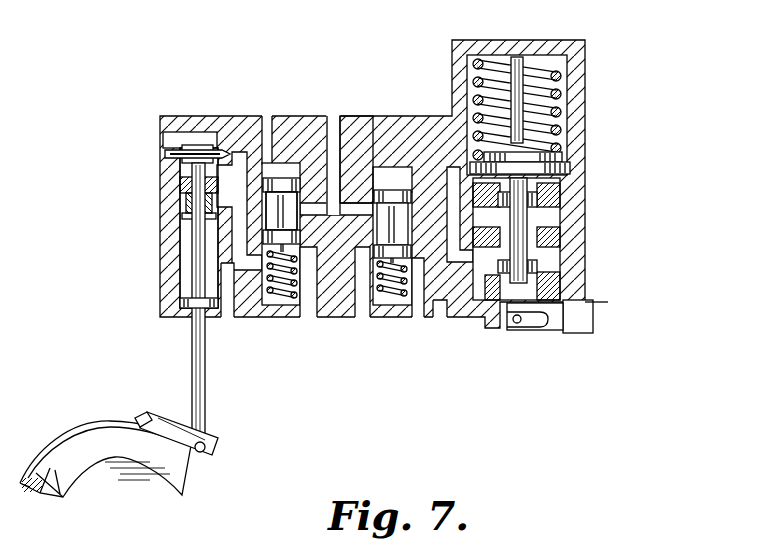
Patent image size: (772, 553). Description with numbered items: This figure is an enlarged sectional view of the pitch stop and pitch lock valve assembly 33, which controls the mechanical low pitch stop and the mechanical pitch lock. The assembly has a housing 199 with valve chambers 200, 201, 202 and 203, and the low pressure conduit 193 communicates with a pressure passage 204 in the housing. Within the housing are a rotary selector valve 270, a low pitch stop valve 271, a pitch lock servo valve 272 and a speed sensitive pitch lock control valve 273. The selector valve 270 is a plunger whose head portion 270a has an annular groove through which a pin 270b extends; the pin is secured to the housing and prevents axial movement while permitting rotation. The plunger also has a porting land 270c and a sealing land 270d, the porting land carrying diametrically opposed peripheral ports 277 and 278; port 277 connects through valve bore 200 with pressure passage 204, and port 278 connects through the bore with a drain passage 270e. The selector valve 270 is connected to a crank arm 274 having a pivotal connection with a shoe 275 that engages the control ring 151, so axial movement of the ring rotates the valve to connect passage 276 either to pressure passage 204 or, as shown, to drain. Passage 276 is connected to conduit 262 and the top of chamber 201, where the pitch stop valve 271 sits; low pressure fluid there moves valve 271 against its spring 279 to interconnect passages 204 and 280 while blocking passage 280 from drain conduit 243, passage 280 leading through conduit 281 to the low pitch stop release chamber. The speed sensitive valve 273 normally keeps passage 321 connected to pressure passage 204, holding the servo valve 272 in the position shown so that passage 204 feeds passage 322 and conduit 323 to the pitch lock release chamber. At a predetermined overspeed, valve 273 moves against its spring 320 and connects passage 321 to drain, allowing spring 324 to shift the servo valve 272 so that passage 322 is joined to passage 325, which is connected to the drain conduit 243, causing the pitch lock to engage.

The housing 199 is at (494, 40).
The pitch stop and pitch lock valve assembly 33 is at (585, 133).
The spring 320 is at (557, 75).
The valve chamber 203 is at (530, 223).
The speed sensitive pitch lock control valve 273 is at (520, 240).
The passage 321 is at (468, 260).
The passage 325 is at (447, 315).
The passage 322 is at (360, 318).
The spring 324 is at (420, 310).
The pitch lock servo valve 272 is at (403, 190).
The valve chamber 202 is at (392, 165).
The pressure passage 204 is at (198, 225).
The low pitch stop valve 271 is at (282, 178).
The valve chamber 201 is at (285, 196).
The passage 276 is at (280, 128).
The spring 279 is at (292, 317).
The passage 280 is at (326, 318).
The rotary selector valve 270 is at (195, 248).
The head portion 270a is at (201, 146).
The pin 270b is at (172, 158).
The porting land 270c is at (192, 214).
The sealing land 270d is at (192, 306).
The drain passage 270e is at (165, 140).
The peripheral port 277 is at (186, 198).
The peripheral port 278 is at (190, 185).
The valve bore 200 is at (186, 278).
The crank arm 274 is at (213, 443).
The shoe 275 is at (180, 443).
The control ring 151 is at (67, 483).
The conduit 262 is at (268, 114).
The low pressure conduit 193 is at (332, 116).
The drain conduit 243 is at (238, 313).
The conduit 281 is at (322, 313).
The conduit 323 is at (348, 317).